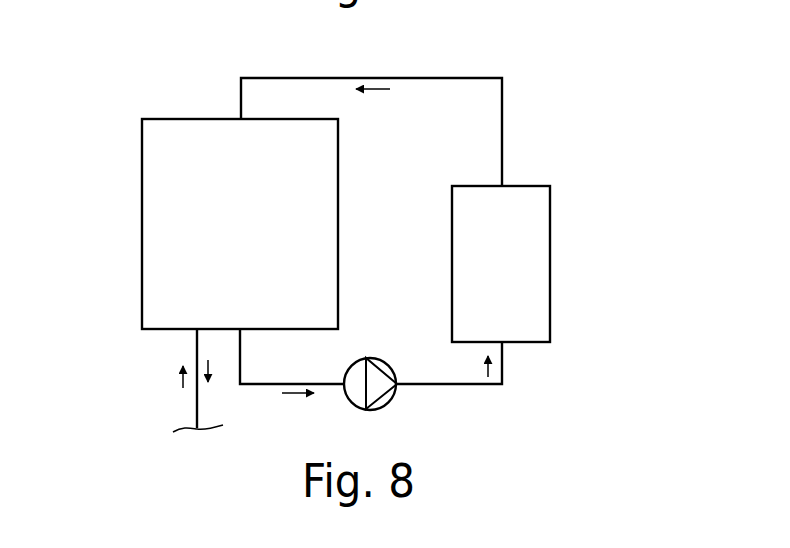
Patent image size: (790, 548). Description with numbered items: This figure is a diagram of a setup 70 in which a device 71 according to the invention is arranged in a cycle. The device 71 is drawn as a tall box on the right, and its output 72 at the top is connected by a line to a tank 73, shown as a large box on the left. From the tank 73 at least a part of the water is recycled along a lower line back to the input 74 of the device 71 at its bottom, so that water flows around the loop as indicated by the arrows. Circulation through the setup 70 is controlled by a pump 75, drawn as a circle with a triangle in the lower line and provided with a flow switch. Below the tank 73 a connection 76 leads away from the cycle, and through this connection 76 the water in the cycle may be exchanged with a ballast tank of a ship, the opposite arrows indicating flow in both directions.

The setup 70 is at (561, 69).
The device 71 is at (533, 267).
The output 72 is at (502, 182).
The tank 73 is at (200, 142).
The input 74 is at (502, 343).
The pump 75 is at (377, 392).
The connection 76 is at (197, 405).